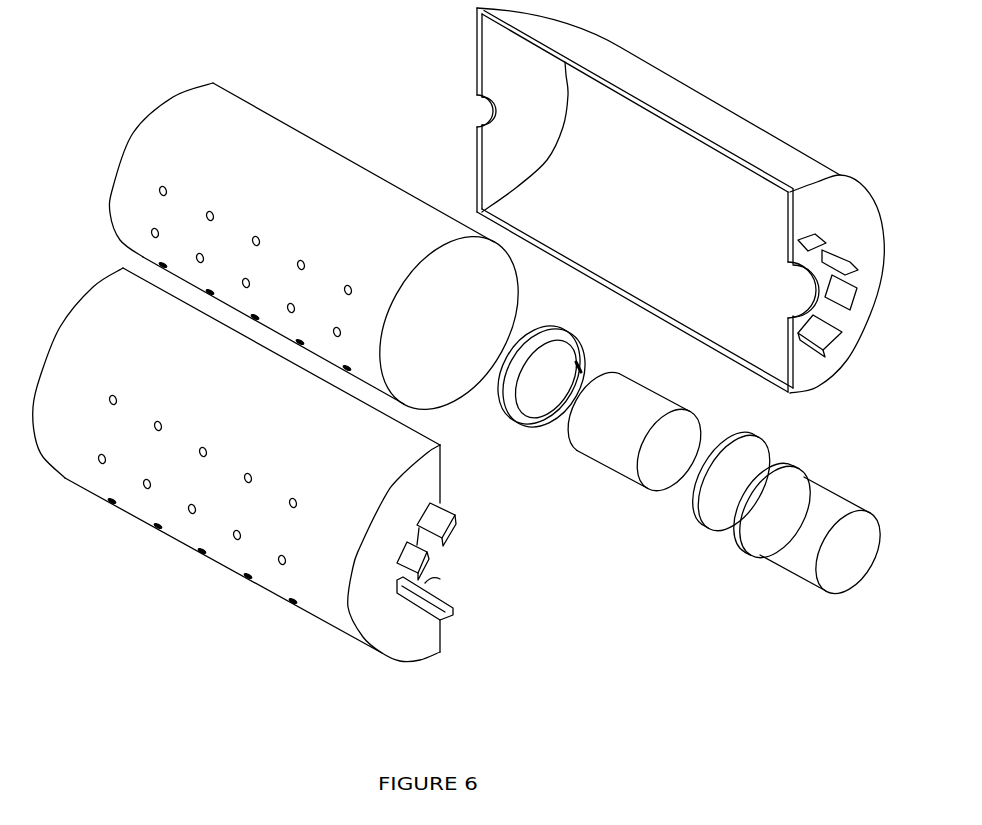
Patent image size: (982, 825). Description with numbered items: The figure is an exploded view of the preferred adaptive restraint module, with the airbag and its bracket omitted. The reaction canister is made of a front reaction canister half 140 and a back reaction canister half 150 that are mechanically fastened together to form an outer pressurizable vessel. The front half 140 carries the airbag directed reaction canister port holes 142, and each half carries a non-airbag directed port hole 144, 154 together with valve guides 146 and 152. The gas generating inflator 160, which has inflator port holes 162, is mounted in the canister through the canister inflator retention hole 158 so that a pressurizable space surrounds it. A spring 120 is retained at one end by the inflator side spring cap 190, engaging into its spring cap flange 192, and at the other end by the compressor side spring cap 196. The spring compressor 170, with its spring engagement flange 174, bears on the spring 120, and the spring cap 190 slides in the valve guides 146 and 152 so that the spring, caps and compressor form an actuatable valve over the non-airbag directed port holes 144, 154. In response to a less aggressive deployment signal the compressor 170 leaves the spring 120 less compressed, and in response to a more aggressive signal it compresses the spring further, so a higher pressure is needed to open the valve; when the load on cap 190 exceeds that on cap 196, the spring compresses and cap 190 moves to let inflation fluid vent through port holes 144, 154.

The spring 120 is at (621, 440).
The reaction canister front half 140 is at (299, 488).
The airbag directed reaction canister port hole 142 is at (187, 500).
The non-airbag directed port hole-canister front half 144 is at (464, 541).
The front half reaction canister valve guide 146 is at (481, 614).
The reaction canister back half 150 is at (629, 211).
The back half reaction canister valve guide 152 is at (835, 324).
The non-airbag directed port hole-canister back half 154 is at (748, 324).
The reaction canister inflator retention hole 158 is at (435, 103).
The gas generating inflator 160 is at (296, 222).
The inflator port hole 162 is at (199, 248).
The spring compressor 170 is at (810, 566).
The spring compressor engagement flange 174 is at (744, 536).
The inflator side spring cap 190 is at (572, 389).
The spring cap flange 192 is at (622, 355).
The compressor side spring cap 196 is at (706, 501).